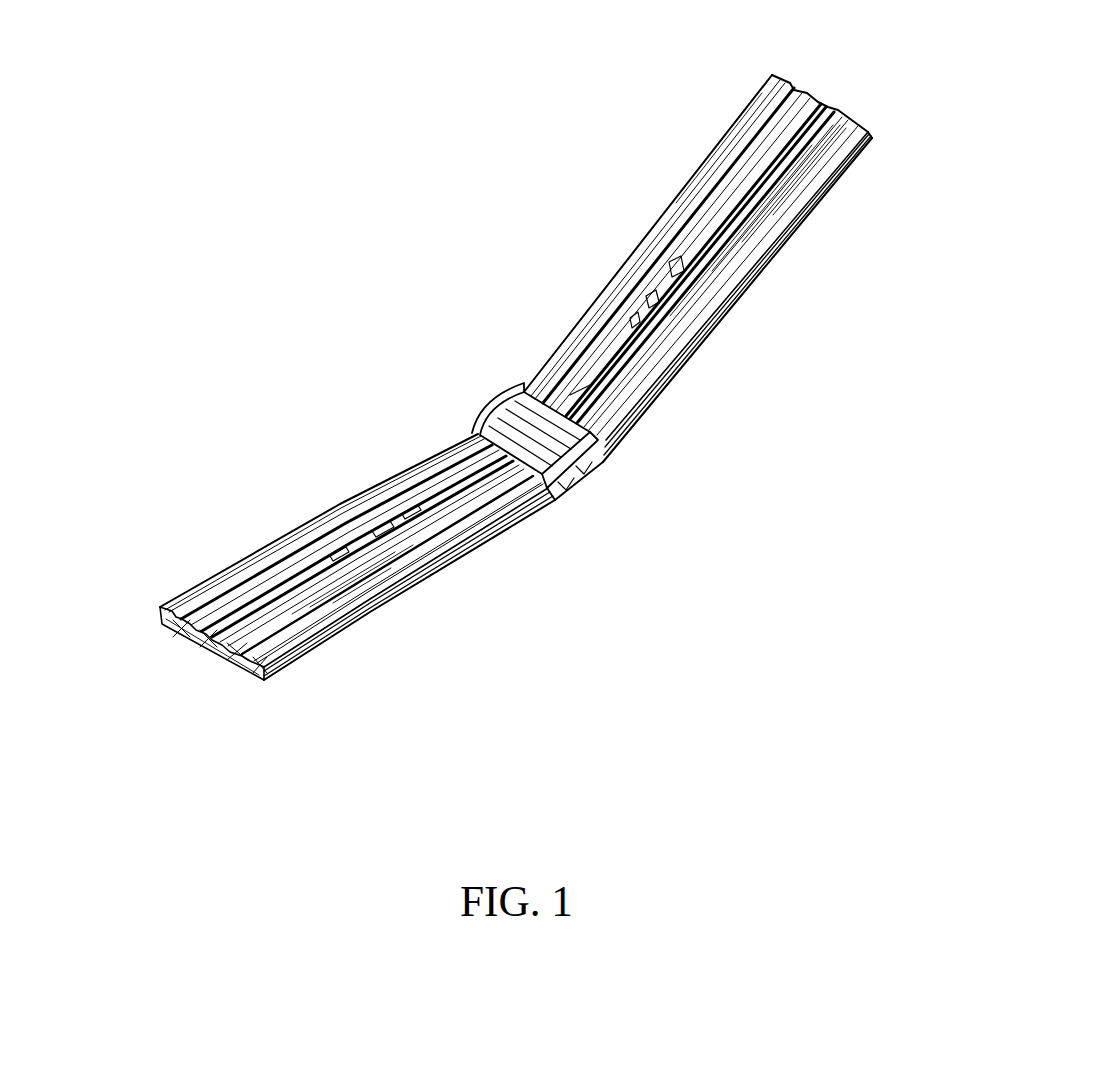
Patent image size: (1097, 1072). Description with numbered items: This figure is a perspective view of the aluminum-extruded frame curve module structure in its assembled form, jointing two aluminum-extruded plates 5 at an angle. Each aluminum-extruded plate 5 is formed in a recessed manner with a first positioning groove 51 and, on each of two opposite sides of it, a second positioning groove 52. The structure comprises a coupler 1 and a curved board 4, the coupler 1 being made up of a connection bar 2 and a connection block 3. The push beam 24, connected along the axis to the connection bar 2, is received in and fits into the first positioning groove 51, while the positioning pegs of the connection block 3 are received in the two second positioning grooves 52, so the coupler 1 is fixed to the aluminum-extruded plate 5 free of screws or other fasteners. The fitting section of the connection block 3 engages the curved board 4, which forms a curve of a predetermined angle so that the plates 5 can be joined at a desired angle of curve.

The coupler 1 is at (580, 388).
The connection bar 2 is at (623, 333).
The connection block 3 is at (544, 410).
The curved board 4 is at (598, 465).
The aluminum-extruded plate 5 is at (516, 349).
The push beam 24 is at (675, 267).
The first positioning groove 51 is at (210, 643).
The second positioning groove 52 is at (180, 633).